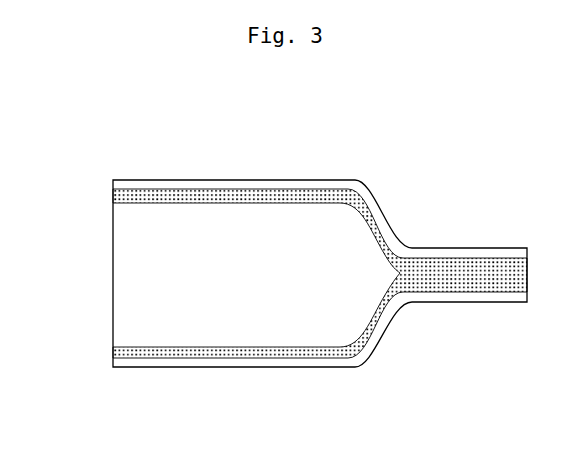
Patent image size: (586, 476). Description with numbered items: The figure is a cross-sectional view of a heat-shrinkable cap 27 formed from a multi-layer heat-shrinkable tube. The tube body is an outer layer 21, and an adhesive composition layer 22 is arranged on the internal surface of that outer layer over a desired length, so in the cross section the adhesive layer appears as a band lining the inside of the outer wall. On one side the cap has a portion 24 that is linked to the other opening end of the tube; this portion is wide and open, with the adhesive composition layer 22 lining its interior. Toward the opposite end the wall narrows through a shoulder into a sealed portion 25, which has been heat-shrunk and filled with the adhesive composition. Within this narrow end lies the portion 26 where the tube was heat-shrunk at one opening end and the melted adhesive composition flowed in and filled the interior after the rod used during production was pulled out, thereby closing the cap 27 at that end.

The outer layer 21 is at (152, 370).
The adhesive composition layer 22 is at (142, 348).
The portion linked to the other opening end 24 is at (213, 156).
The sealed portion 25 is at (488, 221).
The heat-shrunk and adhesive-filled portion 26 is at (462, 280).
The heat-shrinkable cap 27 is at (413, 372).